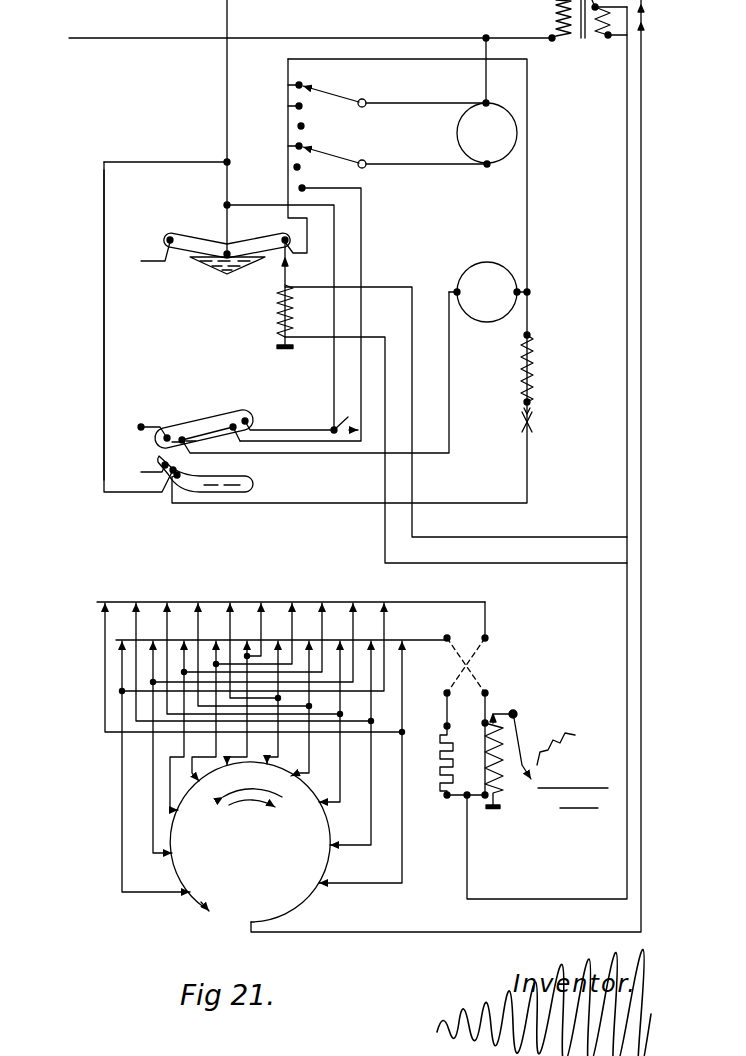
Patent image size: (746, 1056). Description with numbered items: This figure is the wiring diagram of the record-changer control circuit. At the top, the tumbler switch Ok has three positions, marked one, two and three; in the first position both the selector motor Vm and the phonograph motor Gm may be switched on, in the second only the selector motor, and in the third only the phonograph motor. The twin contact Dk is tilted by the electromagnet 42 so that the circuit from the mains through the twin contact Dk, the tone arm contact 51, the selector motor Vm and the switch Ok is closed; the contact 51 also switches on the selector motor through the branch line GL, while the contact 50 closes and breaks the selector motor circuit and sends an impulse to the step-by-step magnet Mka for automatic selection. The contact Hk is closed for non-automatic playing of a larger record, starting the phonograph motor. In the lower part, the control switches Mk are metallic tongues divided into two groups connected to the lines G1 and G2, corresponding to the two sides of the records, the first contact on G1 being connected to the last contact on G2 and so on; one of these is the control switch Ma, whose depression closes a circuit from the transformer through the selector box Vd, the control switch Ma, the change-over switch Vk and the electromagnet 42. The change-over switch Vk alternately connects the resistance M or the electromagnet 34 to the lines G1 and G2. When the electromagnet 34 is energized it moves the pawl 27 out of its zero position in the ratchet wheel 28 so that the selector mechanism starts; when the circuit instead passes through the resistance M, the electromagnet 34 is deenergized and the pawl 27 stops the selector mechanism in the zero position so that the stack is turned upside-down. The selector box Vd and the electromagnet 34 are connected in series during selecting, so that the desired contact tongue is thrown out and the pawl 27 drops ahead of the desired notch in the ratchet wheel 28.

The electromagnet 42 is at (277, 303).
The contact 50 is at (250, 477).
The contact 51 is at (247, 413).
The pawl 27 is at (517, 712).
The ratchet wheel 28 is at (530, 781).
The electromagnet 34 is at (485, 760).
The branch line GL is at (104, 343).
The twin contact DK is at (202, 262).
The tumbler switch OK is at (387, 133).
The phonograph motor GM is at (487, 133).
The selector motor VM is at (489, 292).
The step-by-step magnet Mka is at (535, 365).
The contact Hk is at (344, 415).
The bus Mg is at (103, 602).
The control switches Mk is at (253, 656).
The control switch Ma is at (120, 641).
The line G1 is at (418, 602).
The line G2 is at (407, 643).
The change-over switch Vk is at (473, 665).
The resistance M is at (441, 771).
The selector box Vd is at (250, 842).